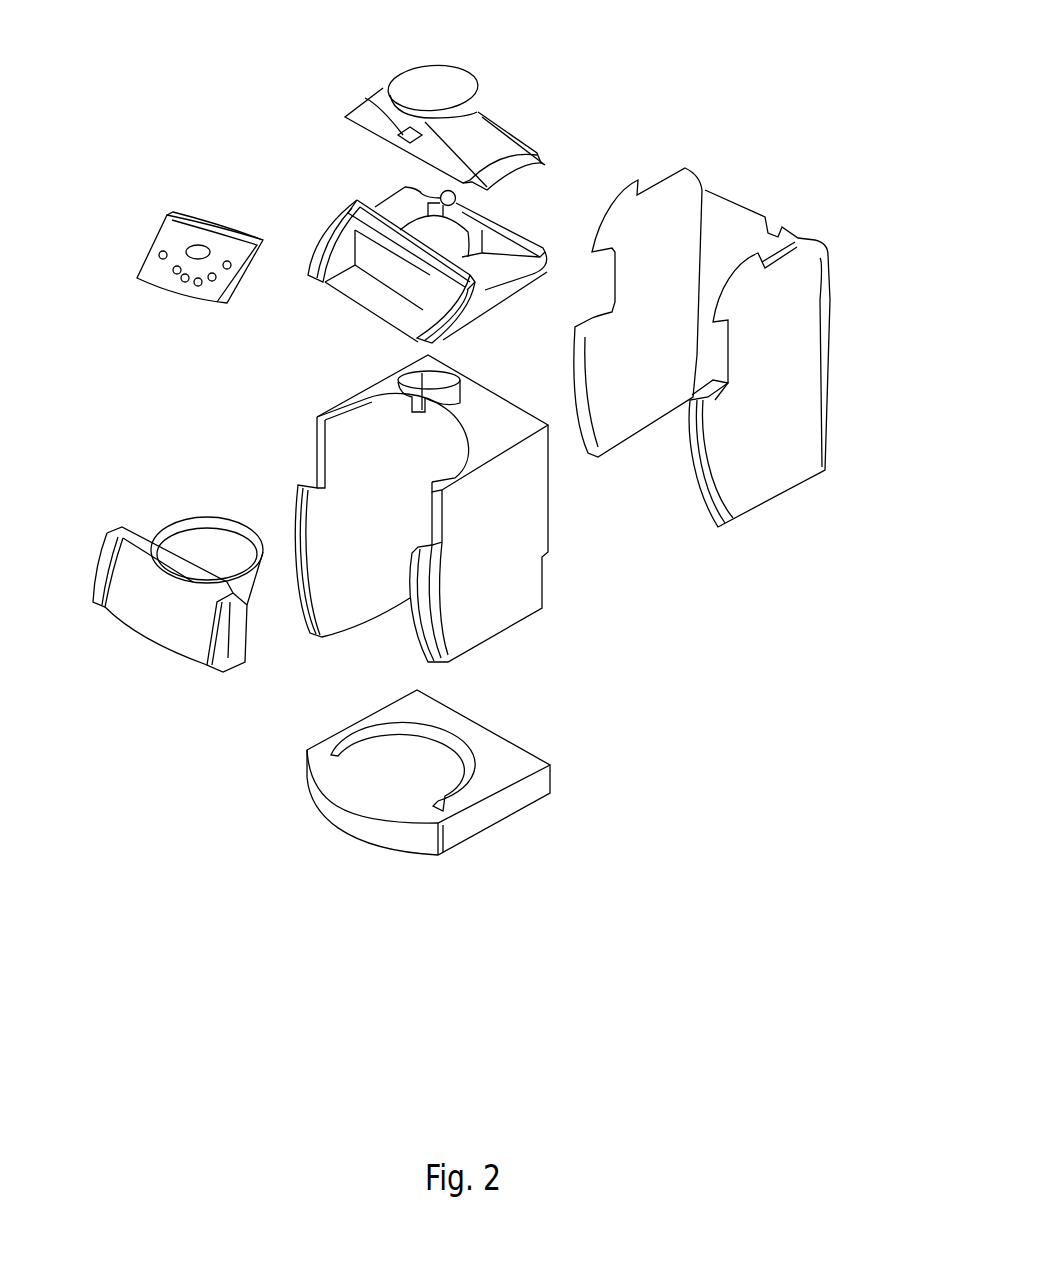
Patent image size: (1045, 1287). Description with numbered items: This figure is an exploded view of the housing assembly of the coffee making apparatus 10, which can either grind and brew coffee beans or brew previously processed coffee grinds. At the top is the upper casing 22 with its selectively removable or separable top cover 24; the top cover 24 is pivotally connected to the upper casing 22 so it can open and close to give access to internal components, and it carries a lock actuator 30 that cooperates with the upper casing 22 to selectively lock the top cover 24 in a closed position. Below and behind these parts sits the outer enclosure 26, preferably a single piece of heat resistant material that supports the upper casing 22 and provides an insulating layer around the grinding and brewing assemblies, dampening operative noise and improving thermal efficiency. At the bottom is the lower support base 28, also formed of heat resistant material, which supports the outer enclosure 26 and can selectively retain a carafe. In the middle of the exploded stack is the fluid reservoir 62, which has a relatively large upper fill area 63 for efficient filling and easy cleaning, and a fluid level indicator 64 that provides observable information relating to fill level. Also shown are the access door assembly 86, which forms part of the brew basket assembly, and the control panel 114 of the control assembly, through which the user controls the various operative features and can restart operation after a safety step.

The coffee making apparatus 10 is at (668, 80).
The upper casing 22 is at (368, 300).
The top cover 24 is at (445, 80).
The outer enclosure 26 is at (810, 367).
The lower support base 28 is at (512, 755).
The lock actuator 30 is at (377, 90).
The fluid reservoir 62 is at (470, 500).
The upper fill area 63 is at (483, 402).
The fluid level indicator 64 is at (378, 395).
The access door assembly 86 is at (140, 618).
The control panel 114 is at (150, 270).